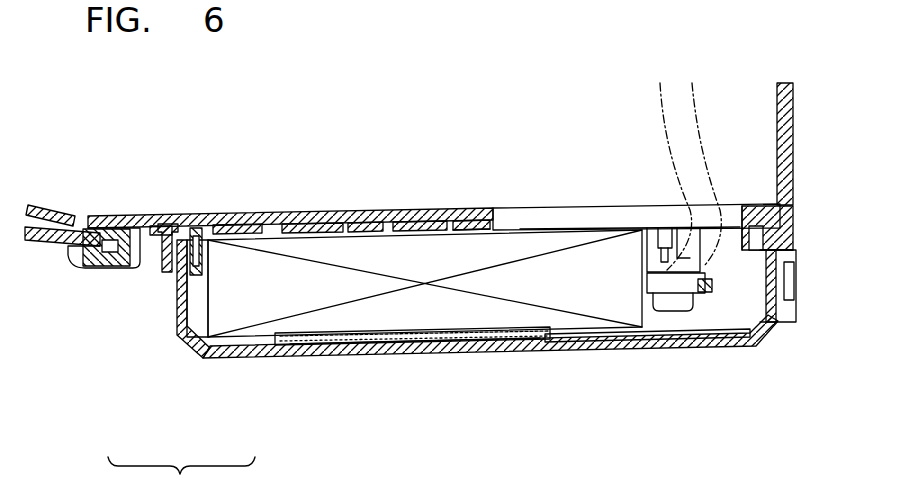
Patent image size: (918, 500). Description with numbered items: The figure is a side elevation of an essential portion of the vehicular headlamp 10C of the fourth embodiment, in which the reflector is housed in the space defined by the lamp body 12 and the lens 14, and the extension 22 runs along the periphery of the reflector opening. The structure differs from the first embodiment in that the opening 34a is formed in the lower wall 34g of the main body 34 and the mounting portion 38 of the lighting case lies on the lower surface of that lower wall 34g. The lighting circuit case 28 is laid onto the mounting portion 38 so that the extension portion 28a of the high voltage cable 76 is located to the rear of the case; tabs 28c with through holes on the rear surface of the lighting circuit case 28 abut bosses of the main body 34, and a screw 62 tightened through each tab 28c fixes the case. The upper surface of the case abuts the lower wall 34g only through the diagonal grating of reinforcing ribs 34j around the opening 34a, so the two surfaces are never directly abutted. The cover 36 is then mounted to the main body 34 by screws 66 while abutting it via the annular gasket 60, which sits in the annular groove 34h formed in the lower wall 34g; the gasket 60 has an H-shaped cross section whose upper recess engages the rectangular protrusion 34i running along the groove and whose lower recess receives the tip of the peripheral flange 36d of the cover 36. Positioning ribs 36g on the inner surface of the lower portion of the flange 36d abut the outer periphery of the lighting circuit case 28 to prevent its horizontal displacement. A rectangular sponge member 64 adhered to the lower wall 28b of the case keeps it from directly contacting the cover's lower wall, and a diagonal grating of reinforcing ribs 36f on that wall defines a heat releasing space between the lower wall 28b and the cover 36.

The headlamp 10C is at (392, 396).
The lamp body 12 is at (181, 478).
The lens 14 is at (40, 247).
The extension 22 is at (50, 213).
The lighting circuit case 28 is at (517, 222).
The extension portion 28a is at (660, 233).
The lower wall 28b is at (582, 343).
The tab 28c is at (703, 284).
The main body 34 is at (123, 273).
The opening 34a is at (556, 213).
The lower wall 34g is at (398, 216).
The annular groove 34h is at (208, 267).
The protrusion 34i is at (207, 223).
The reinforcing ribs 34j is at (490, 233).
The cover 36 is at (265, 362).
The peripheral flange 36d is at (181, 300).
The reinforcing ribs 36f is at (382, 334).
The positioning ribs 36g is at (201, 318).
The mounting portion 38 is at (612, 288).
The annular gasket 60 is at (165, 224).
The screw 62 is at (684, 303).
The sponge member 64 is at (446, 346).
The screw 66 is at (782, 324).
The high voltage cable 76 is at (698, 134).